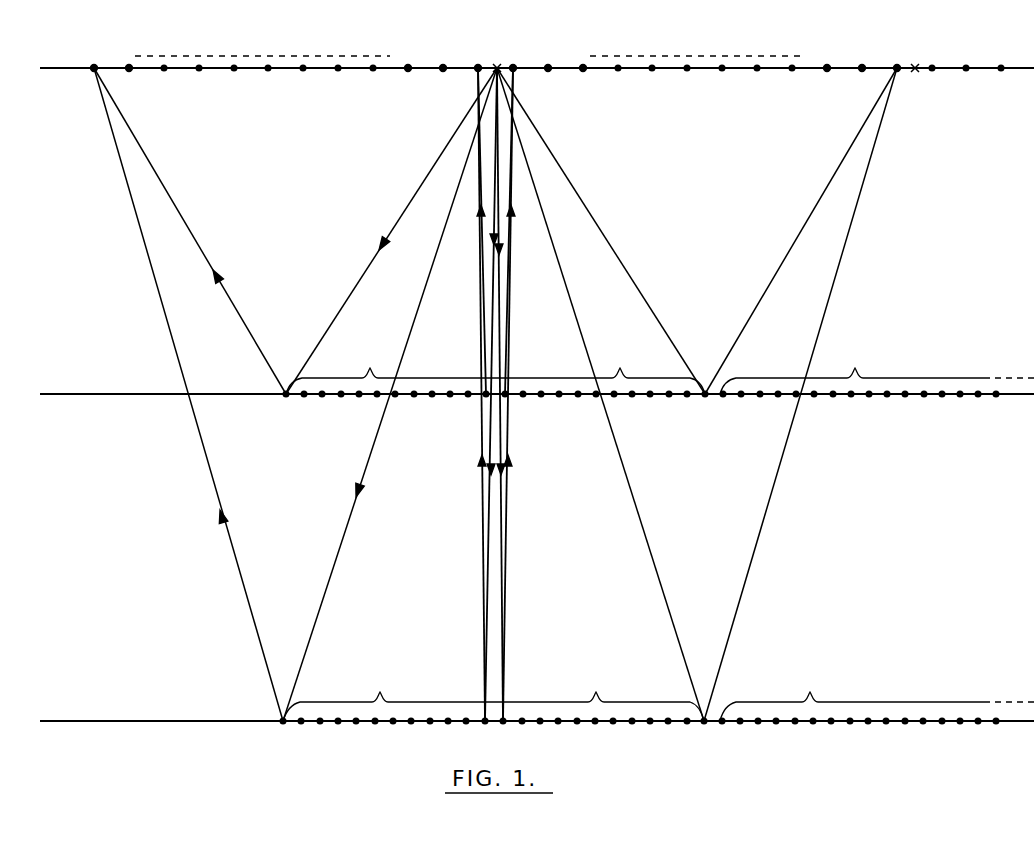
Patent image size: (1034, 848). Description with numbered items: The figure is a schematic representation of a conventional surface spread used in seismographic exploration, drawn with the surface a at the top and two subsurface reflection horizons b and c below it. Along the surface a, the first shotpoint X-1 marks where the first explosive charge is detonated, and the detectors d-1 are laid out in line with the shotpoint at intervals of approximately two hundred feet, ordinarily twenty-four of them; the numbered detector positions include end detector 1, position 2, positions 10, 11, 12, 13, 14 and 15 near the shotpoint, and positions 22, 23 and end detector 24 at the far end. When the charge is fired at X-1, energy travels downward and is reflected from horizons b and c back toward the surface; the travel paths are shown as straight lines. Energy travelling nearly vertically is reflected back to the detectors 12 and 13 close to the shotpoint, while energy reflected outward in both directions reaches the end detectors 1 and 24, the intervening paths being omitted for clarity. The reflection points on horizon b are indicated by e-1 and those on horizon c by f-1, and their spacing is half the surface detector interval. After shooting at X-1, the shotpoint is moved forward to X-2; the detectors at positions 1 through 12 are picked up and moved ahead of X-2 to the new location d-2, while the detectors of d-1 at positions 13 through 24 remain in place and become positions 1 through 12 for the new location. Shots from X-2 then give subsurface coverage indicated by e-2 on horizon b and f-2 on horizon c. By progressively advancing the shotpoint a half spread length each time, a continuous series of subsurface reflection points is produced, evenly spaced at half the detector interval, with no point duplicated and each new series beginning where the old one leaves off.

The surface a is at (521, 69).
The reflection horizon b is at (521, 395).
The reflection horizon c is at (521, 722).
The end detector 1 is at (94, 59).
The detector position 2 is at (127, 59).
The detector position 10 is at (408, 59).
The detector position 11 is at (444, 59).
The detector 12 is at (478, 59).
The detector 13 is at (515, 59).
The detector position 14 is at (548, 59).
The detector position 15 is at (583, 59).
The detector position 22 is at (826, 59).
The detector position 23 is at (861, 59).
The end detector 24 is at (896, 59).
The first shotpoint X-1 is at (497, 62).
The second shotpoint X-2 is at (915, 62).
The detector location d-1 is at (257, 60).
The detector location d-2 is at (942, 57).
The subsurface reflection points e-1 is at (495, 369).
The subsurface coverage e-2 is at (877, 369).
The subsurface reflection points f-1 is at (493, 695).
The subsurface coverage f-2 is at (877, 695).